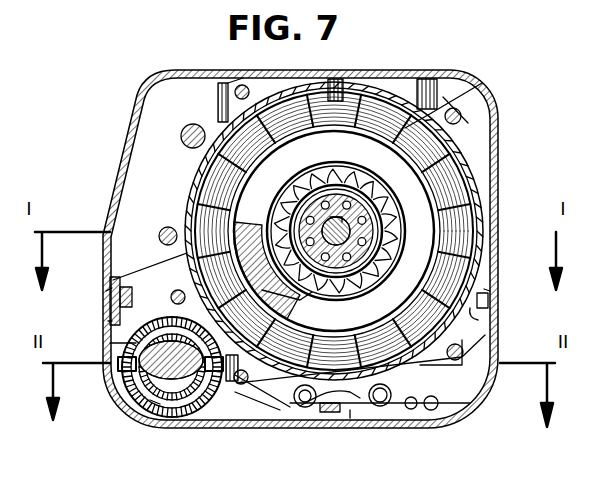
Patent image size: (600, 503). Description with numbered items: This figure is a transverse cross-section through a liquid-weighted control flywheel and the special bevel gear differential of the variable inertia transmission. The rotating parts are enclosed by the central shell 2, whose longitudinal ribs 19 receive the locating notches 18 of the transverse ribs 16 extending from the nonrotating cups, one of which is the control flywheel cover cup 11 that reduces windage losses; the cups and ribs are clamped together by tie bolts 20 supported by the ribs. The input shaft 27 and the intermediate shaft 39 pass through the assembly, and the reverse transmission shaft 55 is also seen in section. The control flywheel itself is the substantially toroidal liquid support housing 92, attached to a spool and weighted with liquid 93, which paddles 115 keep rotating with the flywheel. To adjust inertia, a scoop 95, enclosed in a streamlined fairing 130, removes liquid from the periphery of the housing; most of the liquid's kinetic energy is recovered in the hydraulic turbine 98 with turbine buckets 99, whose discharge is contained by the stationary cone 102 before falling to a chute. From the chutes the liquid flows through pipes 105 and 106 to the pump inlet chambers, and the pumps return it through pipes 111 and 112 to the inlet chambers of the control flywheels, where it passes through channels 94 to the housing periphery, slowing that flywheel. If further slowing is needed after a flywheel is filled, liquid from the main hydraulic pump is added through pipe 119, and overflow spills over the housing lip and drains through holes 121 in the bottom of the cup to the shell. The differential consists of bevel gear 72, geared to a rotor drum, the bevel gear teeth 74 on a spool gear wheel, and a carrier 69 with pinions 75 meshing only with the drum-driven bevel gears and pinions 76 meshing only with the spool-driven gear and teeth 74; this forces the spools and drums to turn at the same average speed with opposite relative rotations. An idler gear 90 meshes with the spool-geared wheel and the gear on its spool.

The central shell 2 is at (152, 84).
The control flywheel cover cup 11 is at (410, 84).
The transverse ribs 16 is at (216, 116).
The locating notches 18 is at (108, 321).
The longitudinal ribs 19 is at (106, 291).
The tie bolts 20 is at (236, 93).
The input shaft 27 is at (162, 241).
The intermediate shaft 39 is at (386, 264).
The reverse transmission shaft 55 is at (182, 141).
The carrier 69 is at (138, 380).
The bevel gear 72 is at (183, 418).
The bevel gear teeth 74 is at (212, 393).
The pinions 75 is at (110, 343).
The pinions 76 is at (118, 370).
The idler gear 90 is at (168, 301).
The liquid support housing 92 is at (470, 89).
The liquid 93 is at (292, 179).
The channels 94 is at (563, 232).
The scoops 95 is at (243, 268).
The hydraulic turbine 98 is at (378, 214).
The turbine buckets 99 is at (368, 168).
The cone 102 is at (316, 166).
The pipe 105 is at (390, 391).
The pipe 106 is at (328, 412).
The pipe 111 is at (410, 412).
The pipe 112 is at (446, 428).
The paddles 115 is at (343, 100).
The pipe 119 is at (303, 418).
The holes 121 is at (348, 345).
The streamlined fairing 130 is at (316, 338).